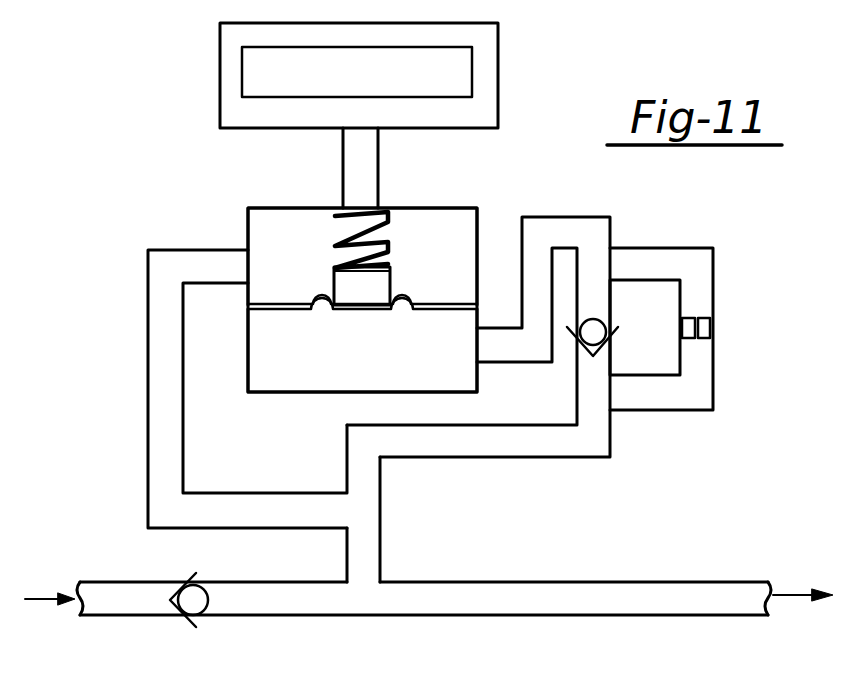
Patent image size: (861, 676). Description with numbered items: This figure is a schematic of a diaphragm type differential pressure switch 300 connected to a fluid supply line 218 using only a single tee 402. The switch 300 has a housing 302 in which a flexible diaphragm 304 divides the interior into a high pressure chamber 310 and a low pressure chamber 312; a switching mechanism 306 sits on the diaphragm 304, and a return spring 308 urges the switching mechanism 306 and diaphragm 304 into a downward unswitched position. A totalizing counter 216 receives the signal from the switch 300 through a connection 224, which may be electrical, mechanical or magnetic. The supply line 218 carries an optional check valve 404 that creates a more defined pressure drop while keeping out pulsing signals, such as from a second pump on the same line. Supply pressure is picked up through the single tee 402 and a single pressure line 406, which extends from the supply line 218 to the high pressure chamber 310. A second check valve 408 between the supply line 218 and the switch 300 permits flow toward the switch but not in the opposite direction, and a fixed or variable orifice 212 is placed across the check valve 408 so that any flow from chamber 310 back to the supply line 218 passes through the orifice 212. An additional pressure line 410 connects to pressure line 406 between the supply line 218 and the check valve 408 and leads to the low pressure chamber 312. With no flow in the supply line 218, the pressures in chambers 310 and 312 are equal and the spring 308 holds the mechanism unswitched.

The fixed or variable orifice 212 is at (713, 326).
The totalizing counter 216 is at (330, 85).
The fluid supply line 218 is at (113, 600).
The connection 224 is at (355, 158).
The differential pressure switch 300 is at (483, 209).
The housing 302 is at (287, 393).
The flexible diaphragm 304 is at (423, 303).
The switching mechanism 306 is at (358, 288).
The return spring 308 is at (380, 233).
The high pressure chamber 310 is at (392, 358).
The low pressure chamber 312 is at (310, 272).
The single tee 402 is at (362, 593).
The check valve 404 is at (200, 610).
The pressure line 406 is at (353, 550).
The second check valve 408 is at (603, 333).
The additional pressure line 410 is at (167, 377).